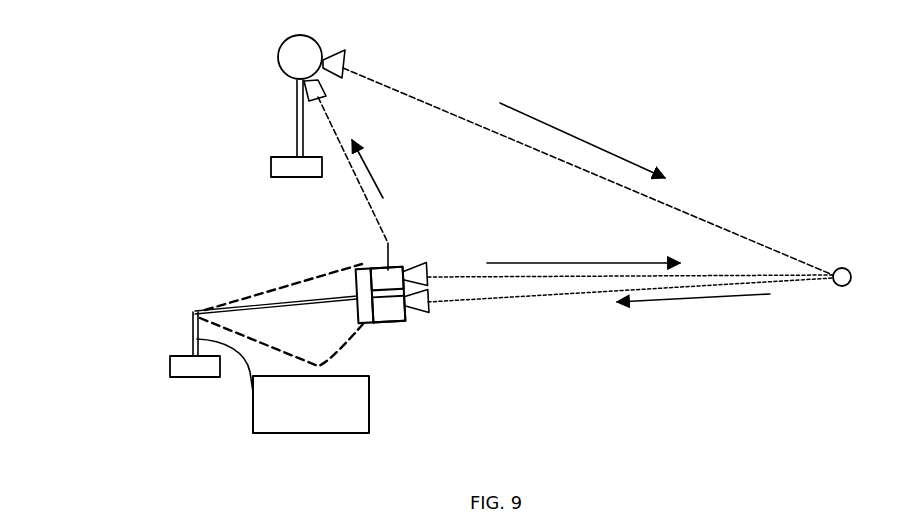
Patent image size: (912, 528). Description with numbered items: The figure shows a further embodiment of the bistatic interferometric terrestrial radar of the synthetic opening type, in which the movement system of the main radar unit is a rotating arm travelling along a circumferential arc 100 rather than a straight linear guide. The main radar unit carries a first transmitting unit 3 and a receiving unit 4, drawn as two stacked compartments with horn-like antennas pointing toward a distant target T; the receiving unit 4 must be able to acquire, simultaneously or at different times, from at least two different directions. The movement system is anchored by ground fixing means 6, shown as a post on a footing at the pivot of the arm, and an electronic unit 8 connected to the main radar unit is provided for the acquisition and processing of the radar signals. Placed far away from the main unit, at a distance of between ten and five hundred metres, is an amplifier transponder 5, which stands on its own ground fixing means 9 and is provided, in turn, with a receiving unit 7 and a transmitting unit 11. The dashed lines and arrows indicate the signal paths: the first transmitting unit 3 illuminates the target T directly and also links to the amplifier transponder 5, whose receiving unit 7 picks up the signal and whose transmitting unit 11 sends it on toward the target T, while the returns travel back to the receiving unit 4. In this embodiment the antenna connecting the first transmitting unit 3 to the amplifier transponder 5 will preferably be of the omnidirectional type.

The amplifier transponder 5 is at (300, 58).
The transmitting unit 11 is at (336, 62).
The receiving unit 7 is at (318, 89).
The ground fixing means 9 is at (296, 140).
The first transmitting unit 3 is at (393, 277).
The receiving unit 4 is at (391, 308).
The target T is at (840, 280).
The ground fixing means 6 is at (195, 366).
The electronic unit 8 is at (311, 404).
The circumferential arc 100 is at (360, 340).